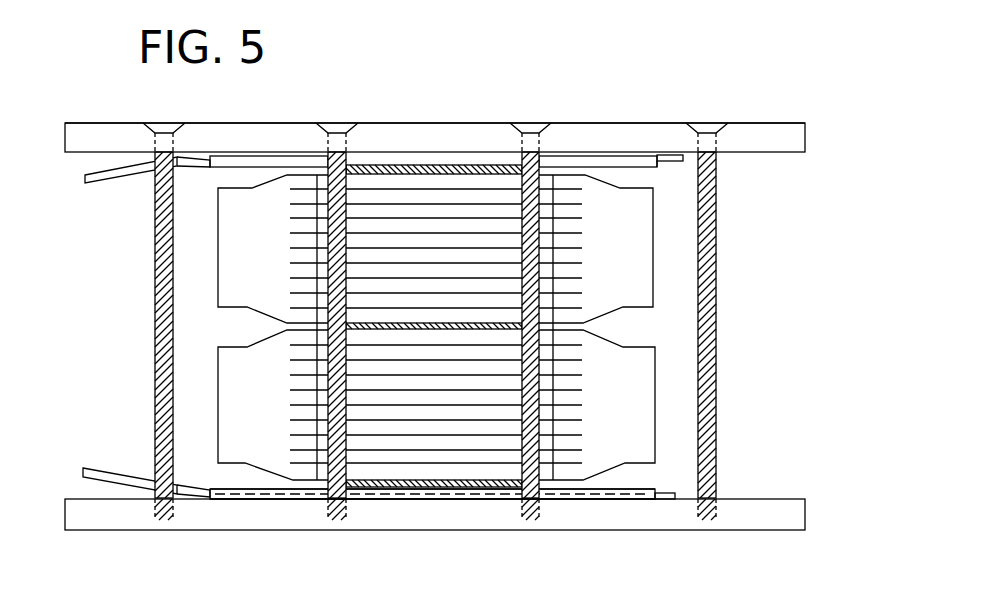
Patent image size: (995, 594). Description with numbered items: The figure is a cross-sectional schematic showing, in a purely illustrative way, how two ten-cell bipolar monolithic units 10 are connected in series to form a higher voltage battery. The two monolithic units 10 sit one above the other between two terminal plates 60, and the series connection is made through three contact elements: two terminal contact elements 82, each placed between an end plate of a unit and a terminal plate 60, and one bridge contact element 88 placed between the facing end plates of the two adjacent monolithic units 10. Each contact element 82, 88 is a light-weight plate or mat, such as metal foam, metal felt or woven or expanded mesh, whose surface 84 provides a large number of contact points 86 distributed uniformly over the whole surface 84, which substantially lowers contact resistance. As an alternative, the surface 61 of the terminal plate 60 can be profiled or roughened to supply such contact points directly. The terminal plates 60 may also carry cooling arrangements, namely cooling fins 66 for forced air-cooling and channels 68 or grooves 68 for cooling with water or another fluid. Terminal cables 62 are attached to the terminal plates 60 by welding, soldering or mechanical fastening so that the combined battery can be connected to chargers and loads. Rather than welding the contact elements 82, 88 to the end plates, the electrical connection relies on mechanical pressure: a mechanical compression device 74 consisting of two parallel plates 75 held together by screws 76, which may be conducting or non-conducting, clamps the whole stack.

The monolithic unit 10 is at (664, 238).
The terminal plate 60 is at (490, 157).
The surface of the terminal plate 61 is at (366, 162).
The terminal cable 62 is at (132, 172).
The cooling fin 66 is at (670, 153).
The channel 68 is at (273, 499).
The mechanical compression device 74 is at (736, 122).
The parallel plate 75 is at (770, 138).
The screw 76 is at (155, 313).
The terminal contact element 82 is at (434, 164).
The surface 84 is at (494, 495).
The contact points 86 is at (495, 505).
The bridge contact element 88 is at (557, 326).